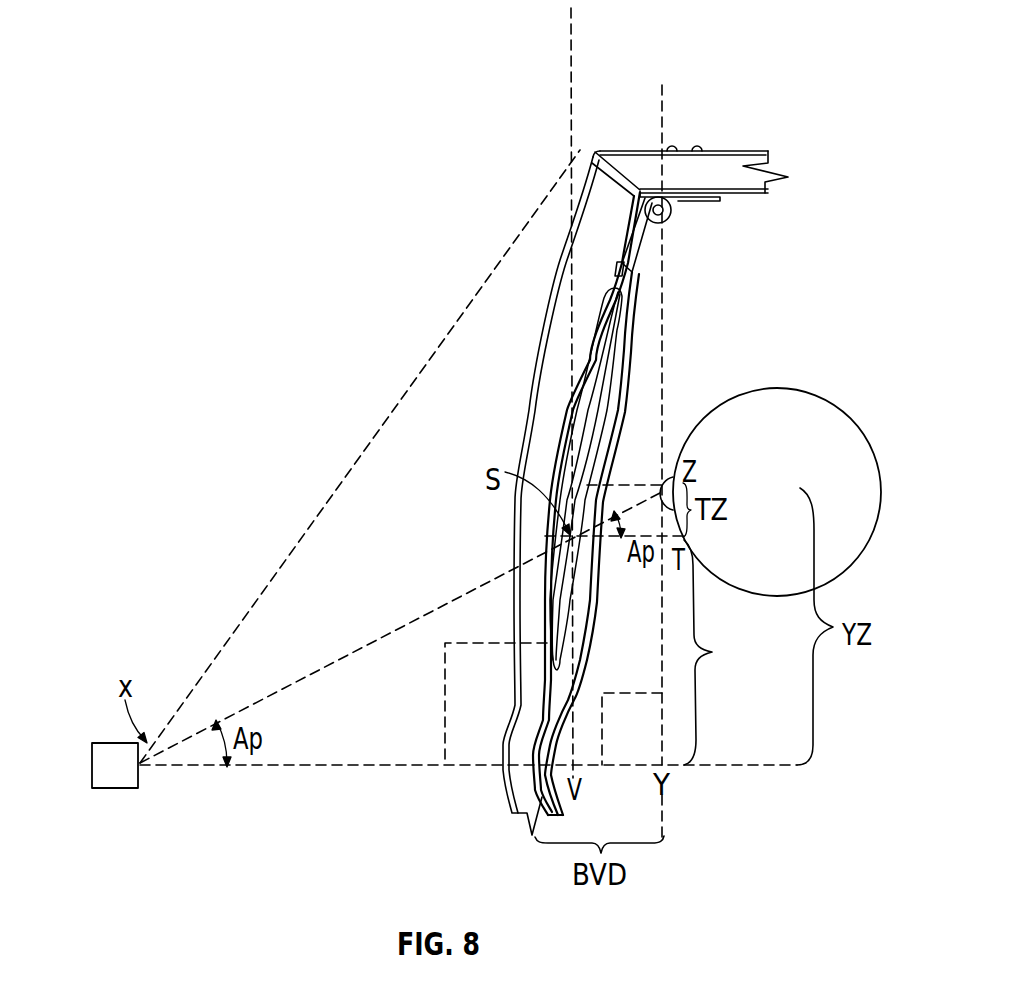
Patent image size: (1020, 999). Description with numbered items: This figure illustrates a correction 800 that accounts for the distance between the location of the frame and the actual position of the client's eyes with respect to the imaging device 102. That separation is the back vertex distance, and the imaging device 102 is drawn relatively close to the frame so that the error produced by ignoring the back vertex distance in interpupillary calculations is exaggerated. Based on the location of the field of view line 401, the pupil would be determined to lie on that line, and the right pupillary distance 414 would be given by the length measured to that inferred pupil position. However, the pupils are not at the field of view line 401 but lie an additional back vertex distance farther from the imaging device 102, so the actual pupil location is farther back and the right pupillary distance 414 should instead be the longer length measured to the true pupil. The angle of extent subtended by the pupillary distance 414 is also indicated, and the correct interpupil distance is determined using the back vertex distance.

The field of view line 401 is at (571, 44).
The correction 800 is at (748, 62).
The imaging device 102 is at (110, 788).
The right pupillary distance 414 is at (737, 652).